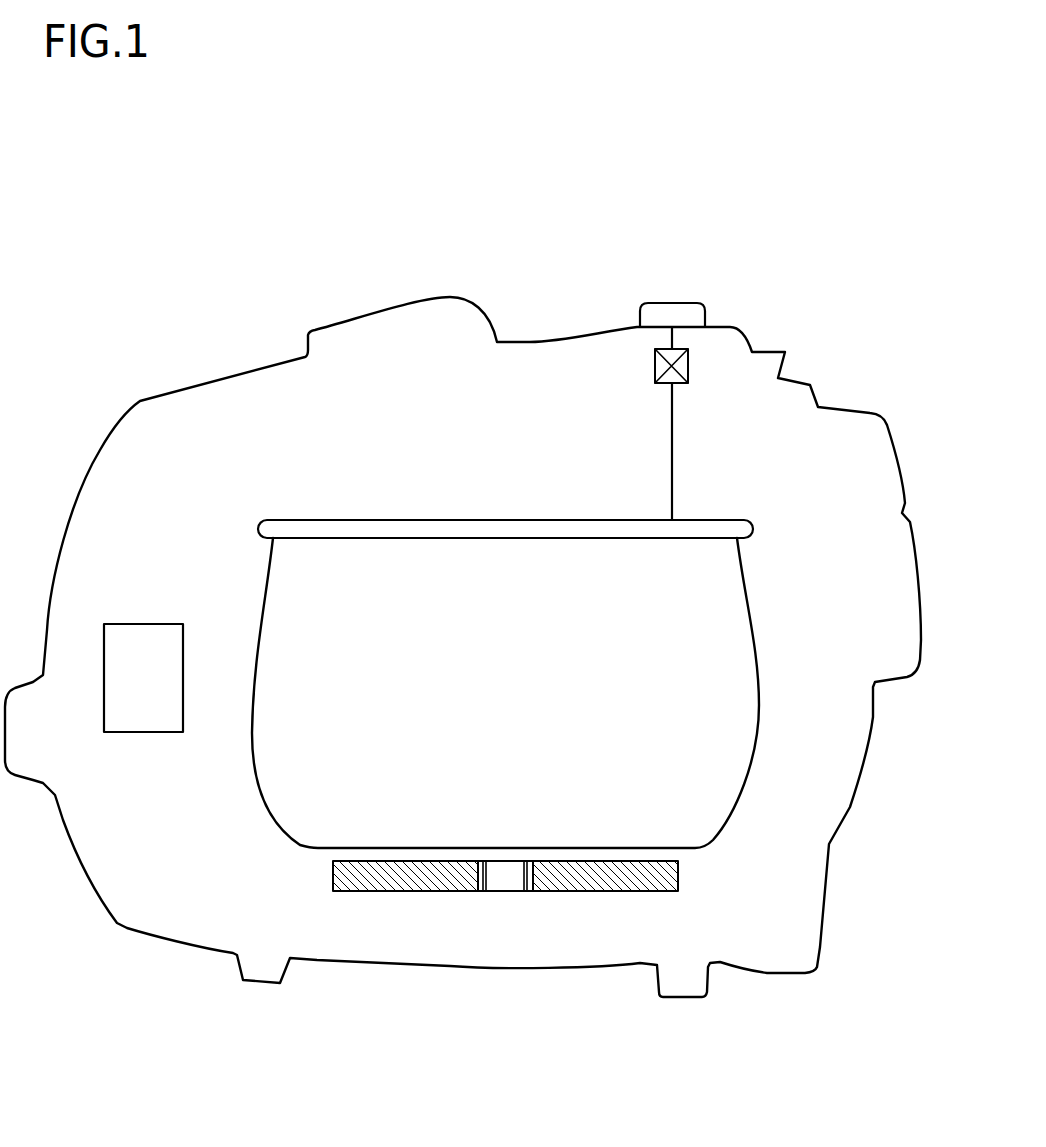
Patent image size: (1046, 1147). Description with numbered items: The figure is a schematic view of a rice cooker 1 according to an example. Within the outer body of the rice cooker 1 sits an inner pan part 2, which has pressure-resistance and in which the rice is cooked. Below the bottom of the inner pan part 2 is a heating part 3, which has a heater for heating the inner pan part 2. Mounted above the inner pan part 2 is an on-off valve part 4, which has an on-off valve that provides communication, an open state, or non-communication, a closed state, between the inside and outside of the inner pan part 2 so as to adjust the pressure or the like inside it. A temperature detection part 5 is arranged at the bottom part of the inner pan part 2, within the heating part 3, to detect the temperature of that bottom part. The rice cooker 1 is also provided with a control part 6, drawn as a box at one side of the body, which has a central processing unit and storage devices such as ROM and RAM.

The rice cooker 1 is at (645, 210).
The inner pan part 2 is at (288, 553).
The heating part 3 is at (383, 880).
The on-off valve part 4 is at (688, 367).
The temperature detection part 5 is at (507, 880).
The control part 6 is at (133, 715).